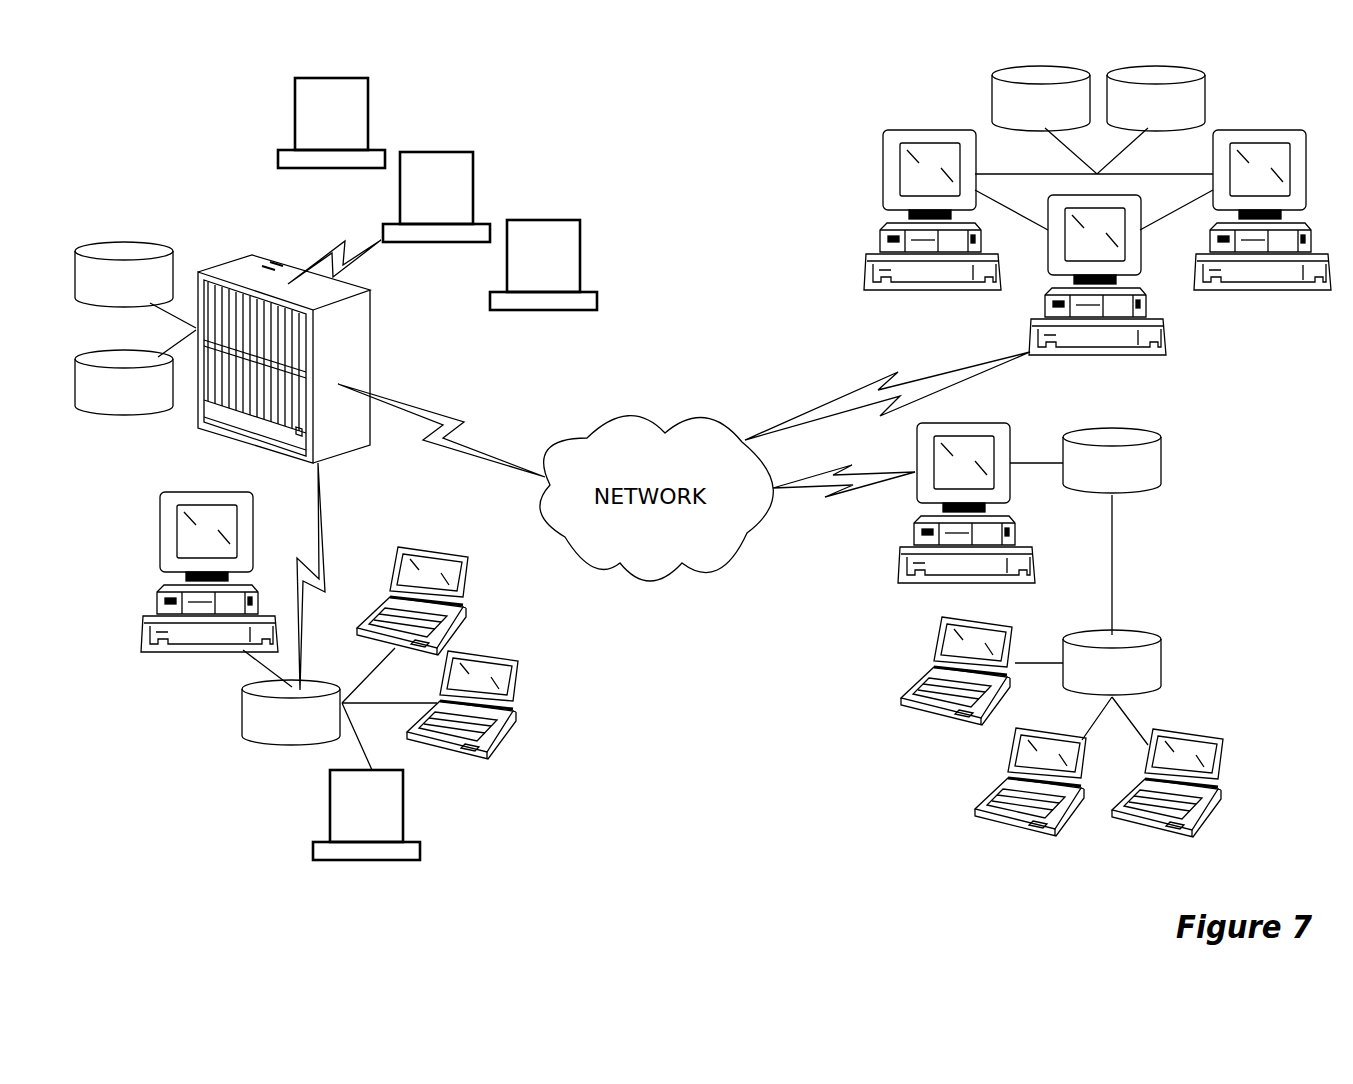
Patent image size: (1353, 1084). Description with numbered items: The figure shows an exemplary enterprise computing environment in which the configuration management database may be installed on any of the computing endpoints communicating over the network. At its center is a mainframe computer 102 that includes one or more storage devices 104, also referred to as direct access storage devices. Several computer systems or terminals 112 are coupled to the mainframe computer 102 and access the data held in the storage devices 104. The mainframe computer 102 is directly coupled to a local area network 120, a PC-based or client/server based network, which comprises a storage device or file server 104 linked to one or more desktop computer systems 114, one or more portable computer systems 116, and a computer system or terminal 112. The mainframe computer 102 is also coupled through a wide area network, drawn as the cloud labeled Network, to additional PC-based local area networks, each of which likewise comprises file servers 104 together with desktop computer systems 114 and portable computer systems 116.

The mainframe computer 102 is at (358, 352).
The storage device 104 is at (1132, 683).
The computer system or terminal 112 is at (480, 132).
The desktop computer system 114 is at (912, 588).
The portable computer system 116 is at (935, 715).
The local area network 120 is at (228, 852).